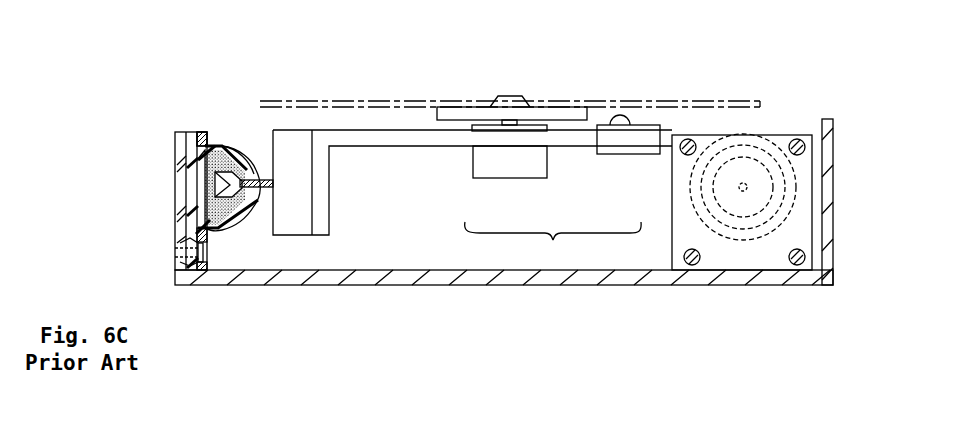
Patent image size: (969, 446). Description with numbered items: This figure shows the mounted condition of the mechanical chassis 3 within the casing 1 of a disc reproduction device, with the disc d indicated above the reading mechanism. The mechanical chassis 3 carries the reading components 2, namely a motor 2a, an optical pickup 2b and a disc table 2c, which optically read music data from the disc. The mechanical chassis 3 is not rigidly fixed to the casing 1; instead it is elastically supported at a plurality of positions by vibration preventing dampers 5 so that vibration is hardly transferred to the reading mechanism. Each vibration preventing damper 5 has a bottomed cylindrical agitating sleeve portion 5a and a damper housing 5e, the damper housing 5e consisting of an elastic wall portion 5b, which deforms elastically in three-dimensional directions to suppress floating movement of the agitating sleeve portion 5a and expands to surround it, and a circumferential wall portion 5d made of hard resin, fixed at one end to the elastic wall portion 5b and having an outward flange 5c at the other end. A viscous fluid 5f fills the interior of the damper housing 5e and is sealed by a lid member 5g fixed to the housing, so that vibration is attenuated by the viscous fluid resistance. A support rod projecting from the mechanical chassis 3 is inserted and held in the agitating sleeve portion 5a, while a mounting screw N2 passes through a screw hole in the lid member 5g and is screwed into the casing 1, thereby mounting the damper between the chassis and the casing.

The casing 1 is at (480, 285).
The motor, optical pickup and disc table assembly 2 is at (553, 244).
The motor 2a is at (517, 178).
The optical pickup 2b is at (622, 155).
The disc table 2c is at (570, 121).
The mechanical chassis 3 is at (398, 148).
The vibration preventing damper 5 is at (218, 140).
The agitating sleeve portion 5a is at (198, 198).
The elastic wall portion 5b is at (222, 146).
The outward flange 5c is at (208, 262).
The circumferential wall portion 5d is at (201, 132).
The damper housing 5e is at (249, 206).
The viscous fluid 5f is at (203, 184).
The lid member 5g is at (192, 162).
The disk d is at (404, 100).
The mounting screw N2 is at (686, 140).